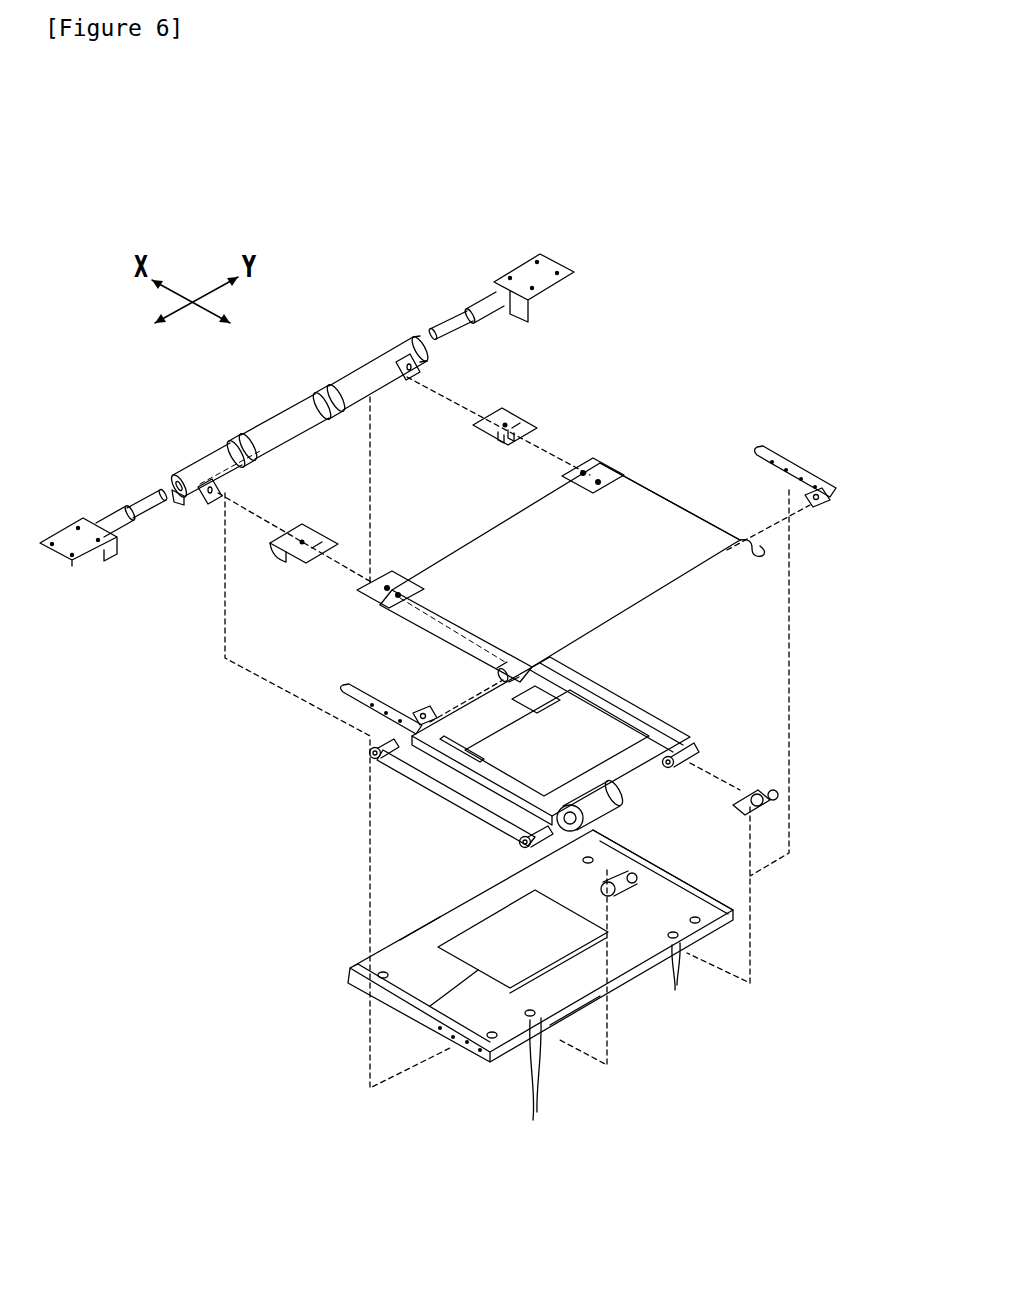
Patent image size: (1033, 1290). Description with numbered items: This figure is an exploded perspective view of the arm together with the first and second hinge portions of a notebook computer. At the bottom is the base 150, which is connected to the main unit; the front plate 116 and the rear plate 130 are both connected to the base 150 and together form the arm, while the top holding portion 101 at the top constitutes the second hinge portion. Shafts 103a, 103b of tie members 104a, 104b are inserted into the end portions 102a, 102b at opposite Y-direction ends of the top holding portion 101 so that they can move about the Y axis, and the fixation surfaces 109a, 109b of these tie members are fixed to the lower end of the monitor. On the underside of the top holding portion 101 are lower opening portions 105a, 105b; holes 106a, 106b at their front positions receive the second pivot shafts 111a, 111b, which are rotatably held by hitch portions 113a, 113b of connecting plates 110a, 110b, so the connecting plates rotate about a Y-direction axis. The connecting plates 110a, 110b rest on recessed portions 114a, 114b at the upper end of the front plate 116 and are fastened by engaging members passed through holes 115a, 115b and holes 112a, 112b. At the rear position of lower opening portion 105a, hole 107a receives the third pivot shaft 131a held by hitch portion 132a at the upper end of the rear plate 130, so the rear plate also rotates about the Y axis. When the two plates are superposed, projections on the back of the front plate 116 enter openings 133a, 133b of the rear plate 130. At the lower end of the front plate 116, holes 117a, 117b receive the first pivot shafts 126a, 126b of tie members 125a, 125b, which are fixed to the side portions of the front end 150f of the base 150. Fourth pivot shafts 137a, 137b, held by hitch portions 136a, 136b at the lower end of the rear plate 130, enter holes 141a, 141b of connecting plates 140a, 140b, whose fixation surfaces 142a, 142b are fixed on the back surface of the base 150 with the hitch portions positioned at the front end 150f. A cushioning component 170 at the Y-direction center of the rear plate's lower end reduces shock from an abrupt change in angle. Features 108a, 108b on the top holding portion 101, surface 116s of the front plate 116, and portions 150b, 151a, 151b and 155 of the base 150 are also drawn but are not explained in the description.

The top holding portion 101 is at (382, 355).
The end portion 102a is at (176, 472).
The end portion 102b is at (413, 340).
The shaft 103a is at (135, 496).
The shaft 103b is at (448, 325).
The tie member 104a is at (90, 560).
The tie member 104b is at (563, 270).
The lower opening portion 105a is at (218, 505).
The lower opening portion 105b is at (480, 732).
The hole 106a is at (182, 505).
The hole 106b is at (420, 364).
The hole 107a is at (172, 515).
The collar 108a is at (242, 450).
The collar 108b is at (336, 393).
The fixation surface 109a is at (60, 524).
The fixation surface 109b is at (524, 262).
The connecting plate 110a is at (315, 524).
The connecting plate 110b is at (535, 420).
The shaft (second pivot) 111a is at (282, 552).
The shaft (second pivot) 111b is at (498, 436).
The hole 112a is at (338, 542).
The hole 112b is at (503, 443).
The hitch portion 113a is at (292, 526).
The hitch portion 113b is at (500, 412).
The recessed portion 114a is at (375, 604).
The recessed portion 114b is at (600, 458).
The hole 115a is at (418, 582).
The hole 115b is at (588, 488).
The front plate (first supporting member) 116 is at (692, 512).
The plate surface 116s is at (617, 577).
The hole 117a is at (505, 673).
The hole 117b is at (748, 556).
The tie member 125a is at (350, 706).
The tie member 125b is at (786, 452).
The shaft (first pivot) 126a is at (420, 712).
The shaft (first pivot) 126b is at (824, 508).
The rear plate (second supporting member) 130 is at (633, 748).
The shaft (third pivot) 131a is at (368, 757).
The hitch portion 132a is at (390, 760).
The opening 133a is at (452, 768).
The opening 133b is at (594, 696).
The hitch portion 136a is at (535, 848).
The hitch portion 136b is at (698, 762).
The shaft (fourth pivot) 137a is at (520, 840).
The shaft (fourth pivot) 137b is at (700, 752).
The connecting plate 140a is at (662, 878).
The connecting plate 140b is at (778, 815).
The hole 141a is at (605, 892).
The hole 141b is at (760, 822).
The fixation surface 142a is at (574, 906).
The fixation surface 142b is at (738, 800).
The base (fixing portion, base unit) 150 is at (620, 967).
The base plate edge 150b is at (420, 936).
The front end 150f is at (575, 1007).
The spring tab 151a is at (548, 1090).
The spring tab 151b is at (693, 984).
The spring 155 is at (430, 1006).
The cushioning component 170 is at (622, 800).